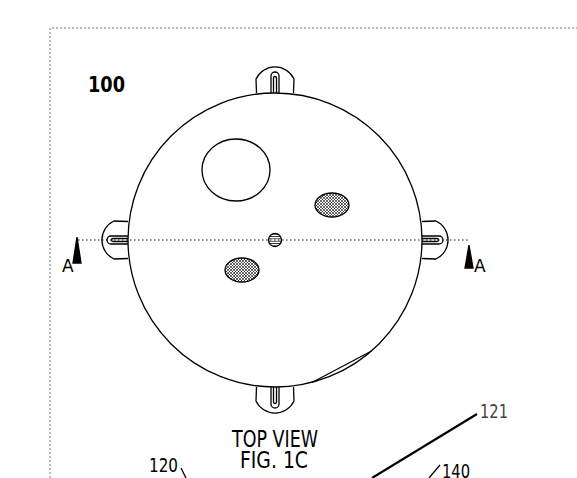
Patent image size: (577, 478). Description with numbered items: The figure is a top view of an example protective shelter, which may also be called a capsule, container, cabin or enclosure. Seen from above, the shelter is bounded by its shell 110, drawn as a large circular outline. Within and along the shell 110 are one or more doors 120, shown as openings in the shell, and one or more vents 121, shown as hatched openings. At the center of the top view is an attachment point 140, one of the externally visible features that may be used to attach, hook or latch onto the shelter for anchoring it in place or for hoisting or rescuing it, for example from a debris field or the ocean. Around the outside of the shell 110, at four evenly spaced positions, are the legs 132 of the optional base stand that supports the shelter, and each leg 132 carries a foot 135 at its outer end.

The shell 110 is at (356, 114).
The door 120 is at (248, 164).
The vent 121 is at (351, 206).
The leg 132 is at (439, 233).
The foot 135 is at (463, 247).
The attachment point 140 is at (281, 233).